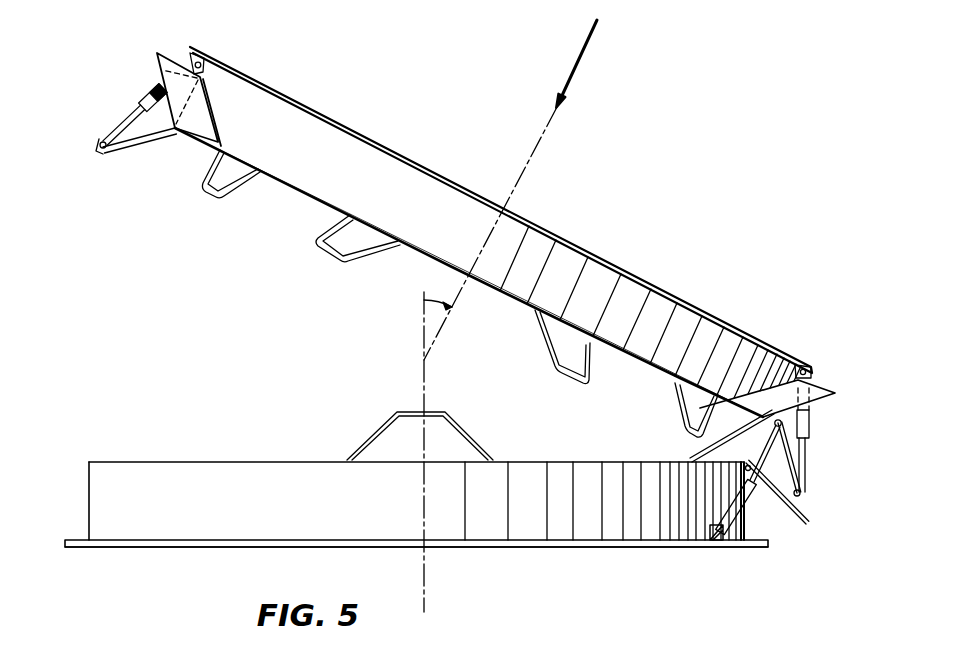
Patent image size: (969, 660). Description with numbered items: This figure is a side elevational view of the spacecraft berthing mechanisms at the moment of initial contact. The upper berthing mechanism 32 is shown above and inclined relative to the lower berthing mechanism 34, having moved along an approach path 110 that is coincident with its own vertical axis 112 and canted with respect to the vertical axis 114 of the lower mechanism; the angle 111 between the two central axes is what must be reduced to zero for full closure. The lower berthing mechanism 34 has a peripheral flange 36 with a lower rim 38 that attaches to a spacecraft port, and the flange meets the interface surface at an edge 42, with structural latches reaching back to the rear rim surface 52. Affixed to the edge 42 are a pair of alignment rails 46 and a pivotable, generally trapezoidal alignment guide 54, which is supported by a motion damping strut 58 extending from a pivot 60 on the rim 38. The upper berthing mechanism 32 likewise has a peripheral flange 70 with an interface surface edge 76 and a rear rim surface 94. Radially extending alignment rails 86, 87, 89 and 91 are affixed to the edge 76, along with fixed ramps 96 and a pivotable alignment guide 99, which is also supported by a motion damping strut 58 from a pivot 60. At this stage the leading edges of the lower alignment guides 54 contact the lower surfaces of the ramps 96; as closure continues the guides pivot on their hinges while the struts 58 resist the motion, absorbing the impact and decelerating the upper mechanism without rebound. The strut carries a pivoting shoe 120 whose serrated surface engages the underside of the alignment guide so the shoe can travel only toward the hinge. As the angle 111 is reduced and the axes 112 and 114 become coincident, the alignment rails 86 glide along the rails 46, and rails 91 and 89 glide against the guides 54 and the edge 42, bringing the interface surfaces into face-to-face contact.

The upper berthing mechanism 32 is at (698, 292).
The lower berthing mechanism 34 is at (582, 552).
The peripheral flange 36 is at (237, 470).
The lower rim 38 is at (114, 544).
The edge 42 is at (89, 462).
The alignment rails 46 is at (382, 425).
The rear rim surface 52 is at (250, 548).
The alignment guide 54 is at (702, 454).
The motion damping strut 58 is at (146, 92).
The pivot 60 is at (193, 50).
The peripheral flange 70 is at (493, 232).
The interface surface edge 76 is at (307, 197).
The alignment rail 86 is at (336, 262).
The alignment rail 87 is at (543, 342).
The alignment rail 89 is at (214, 198).
The alignment rail 91 is at (676, 398).
The rear rim surface 94 is at (415, 157).
The fixed ramp 96 is at (823, 390).
The alignment guide 99 is at (102, 152).
The approach path 110 is at (581, 58).
The angle 111 is at (428, 297).
The vertical axis 112 is at (530, 172).
The vertical axis 114 is at (428, 600).
The pivoting shoe 120 is at (802, 496).